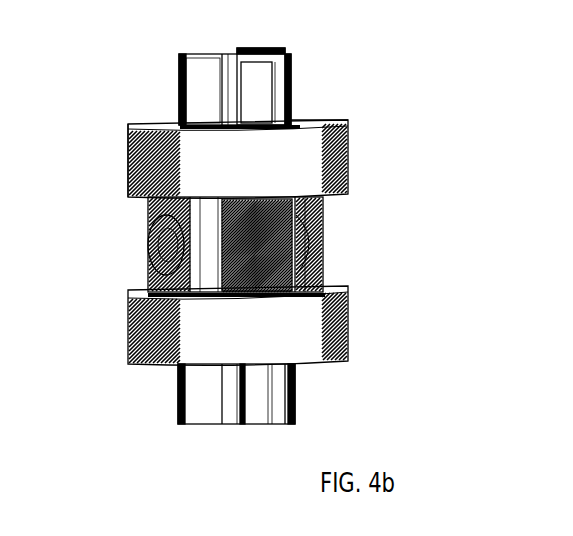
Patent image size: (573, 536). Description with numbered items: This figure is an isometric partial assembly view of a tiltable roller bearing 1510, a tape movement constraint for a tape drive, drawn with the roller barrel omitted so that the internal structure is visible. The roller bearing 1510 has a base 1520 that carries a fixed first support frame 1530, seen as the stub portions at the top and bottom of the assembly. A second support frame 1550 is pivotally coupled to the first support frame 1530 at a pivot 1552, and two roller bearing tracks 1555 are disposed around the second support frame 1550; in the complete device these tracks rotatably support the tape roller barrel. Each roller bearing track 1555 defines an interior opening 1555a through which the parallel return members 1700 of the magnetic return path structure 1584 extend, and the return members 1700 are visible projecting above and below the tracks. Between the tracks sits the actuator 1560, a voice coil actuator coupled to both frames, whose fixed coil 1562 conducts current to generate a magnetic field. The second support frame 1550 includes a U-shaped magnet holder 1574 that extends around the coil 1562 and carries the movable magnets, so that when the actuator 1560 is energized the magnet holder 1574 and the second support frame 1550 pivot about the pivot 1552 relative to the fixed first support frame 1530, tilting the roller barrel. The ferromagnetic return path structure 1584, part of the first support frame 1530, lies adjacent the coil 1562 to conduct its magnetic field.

The tiltable roller bearing 1510 is at (103, 150).
The base 1520 is at (180, 390).
The first support frame 1530 is at (178, 54).
The second support frame 1550 is at (148, 279).
The pivot 1552 is at (162, 243).
The roller bearing tracks 1555 is at (300, 180).
The interior opening 1555a is at (335, 112).
The actuator 1560 is at (284, 105).
The coil 1562 is at (303, 240).
The magnet holder 1574 is at (144, 245).
The magnetic return path structure 1584 is at (283, 52).
The parallel return members 1700 is at (200, 92).